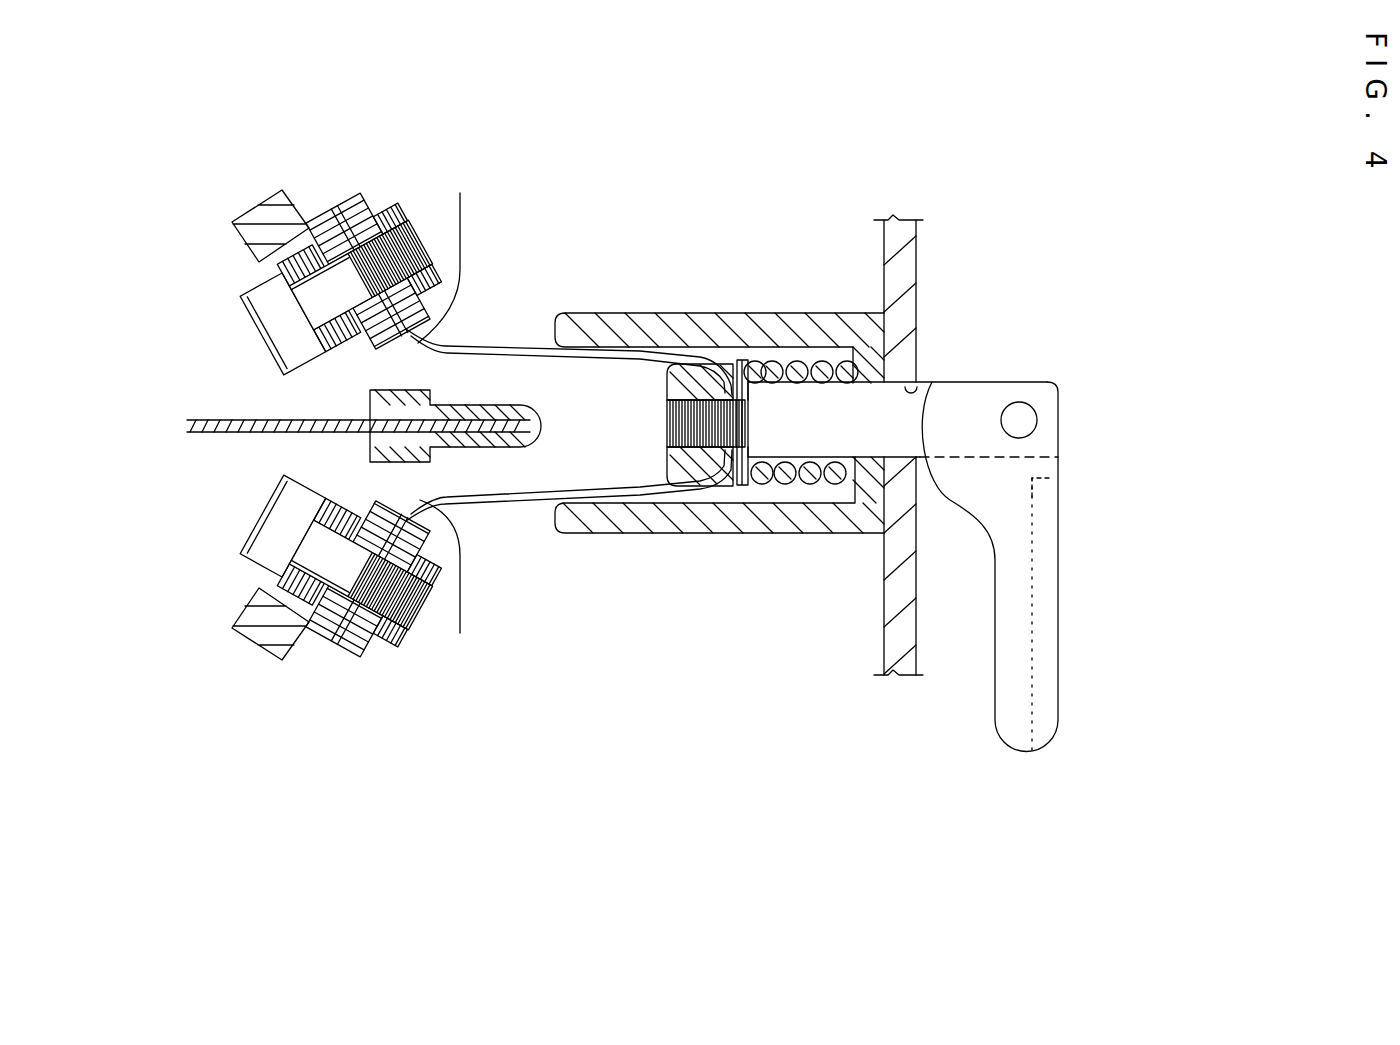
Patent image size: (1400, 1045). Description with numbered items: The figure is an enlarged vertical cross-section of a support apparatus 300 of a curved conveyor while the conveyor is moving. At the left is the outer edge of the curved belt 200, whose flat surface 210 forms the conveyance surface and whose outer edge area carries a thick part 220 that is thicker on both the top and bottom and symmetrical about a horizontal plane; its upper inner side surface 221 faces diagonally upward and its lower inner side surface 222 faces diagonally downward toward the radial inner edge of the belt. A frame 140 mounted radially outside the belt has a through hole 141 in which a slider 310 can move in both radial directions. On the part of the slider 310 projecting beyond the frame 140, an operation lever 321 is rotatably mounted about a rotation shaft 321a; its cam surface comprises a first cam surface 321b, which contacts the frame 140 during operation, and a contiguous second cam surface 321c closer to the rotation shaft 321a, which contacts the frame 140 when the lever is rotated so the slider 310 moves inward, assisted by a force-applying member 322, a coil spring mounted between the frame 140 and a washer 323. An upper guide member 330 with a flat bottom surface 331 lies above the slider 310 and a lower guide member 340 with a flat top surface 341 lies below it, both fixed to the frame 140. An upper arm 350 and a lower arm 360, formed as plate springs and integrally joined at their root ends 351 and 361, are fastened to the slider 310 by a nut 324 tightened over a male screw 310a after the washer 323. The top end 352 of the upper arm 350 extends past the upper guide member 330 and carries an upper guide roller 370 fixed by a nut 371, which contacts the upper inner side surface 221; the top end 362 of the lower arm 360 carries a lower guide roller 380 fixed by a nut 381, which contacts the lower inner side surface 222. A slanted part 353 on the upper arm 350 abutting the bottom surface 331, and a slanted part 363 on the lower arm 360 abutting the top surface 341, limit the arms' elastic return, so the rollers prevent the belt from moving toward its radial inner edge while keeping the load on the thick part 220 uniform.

The frame 140 is at (927, 266).
The through hole 141 is at (927, 383).
The curved belt 200 is at (116, 465).
The flat surface 210 is at (248, 432).
The thick part 220 is at (401, 470).
The upper inner side surface 221 is at (305, 378).
The lower inner side surface 222 is at (293, 420).
The support apparatus 300 is at (805, 147).
The slider 310 is at (870, 405).
The male screw 310a is at (690, 430).
The operation lever 321 is at (1024, 636).
The rotation shaft 321a is at (1023, 422).
The first cam surface 321b is at (922, 420).
The second cam surface 321c is at (1005, 381).
The force-applying member 322 is at (812, 490).
The washer 323 is at (756, 490).
The nut 324 is at (683, 382).
The upper guide member 330 is at (571, 323).
The bottom surface 331 is at (733, 345).
The lower guide member 340 is at (567, 537).
The top surface 341 is at (698, 534).
The upper arm 350 is at (521, 332).
The root end 351 is at (745, 358).
The top end 352 is at (449, 252).
The slanted part 353 is at (641, 345).
The lower arm 360 is at (522, 514).
The root end 361 is at (737, 465).
The top end 362 is at (459, 620).
The slanted part 363 is at (642, 535).
The upper guide roller 370 is at (262, 190).
The nut 371 is at (387, 200).
The lower guide roller 380 is at (258, 655).
The nut 381 is at (386, 655).